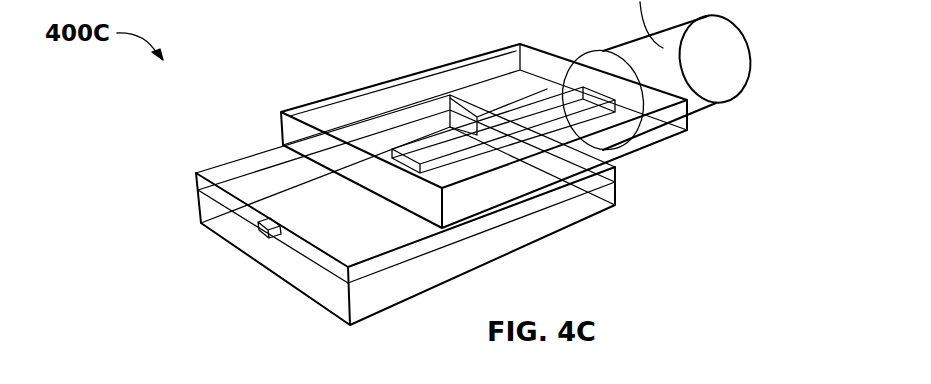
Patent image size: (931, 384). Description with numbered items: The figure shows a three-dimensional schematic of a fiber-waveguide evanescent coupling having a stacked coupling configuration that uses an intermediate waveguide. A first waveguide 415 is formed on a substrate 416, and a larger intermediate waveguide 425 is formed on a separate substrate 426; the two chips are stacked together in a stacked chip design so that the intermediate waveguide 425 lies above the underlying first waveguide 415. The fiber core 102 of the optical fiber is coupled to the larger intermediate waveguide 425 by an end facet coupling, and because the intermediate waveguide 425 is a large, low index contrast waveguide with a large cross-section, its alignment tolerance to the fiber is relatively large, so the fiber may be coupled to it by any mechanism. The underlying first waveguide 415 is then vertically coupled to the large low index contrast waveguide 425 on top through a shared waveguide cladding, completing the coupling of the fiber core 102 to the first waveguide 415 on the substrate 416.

The fiber core 102 is at (603, 74).
The first waveguide 415 is at (258, 227).
The substrate 416 is at (313, 287).
The intermediate waveguide 425 is at (588, 133).
The substrate 426 is at (503, 183).